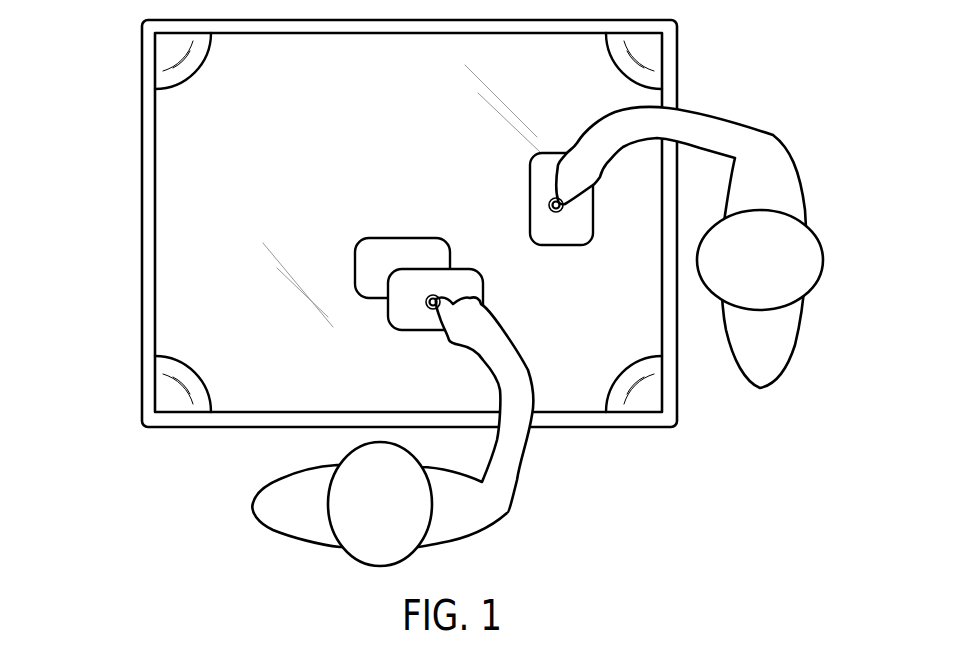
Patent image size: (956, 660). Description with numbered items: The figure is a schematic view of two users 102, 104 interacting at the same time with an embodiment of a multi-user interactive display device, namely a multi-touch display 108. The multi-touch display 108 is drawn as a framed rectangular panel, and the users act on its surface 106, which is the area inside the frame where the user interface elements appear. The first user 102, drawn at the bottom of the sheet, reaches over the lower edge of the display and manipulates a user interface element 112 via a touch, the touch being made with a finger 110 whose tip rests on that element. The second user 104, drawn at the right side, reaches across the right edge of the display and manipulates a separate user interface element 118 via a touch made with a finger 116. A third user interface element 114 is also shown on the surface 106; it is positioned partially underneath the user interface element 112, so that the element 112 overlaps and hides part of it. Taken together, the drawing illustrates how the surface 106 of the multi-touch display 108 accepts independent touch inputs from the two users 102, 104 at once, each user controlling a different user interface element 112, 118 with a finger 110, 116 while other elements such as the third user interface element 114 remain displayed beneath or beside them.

The user 102 is at (523, 463).
The user 104 is at (738, 123).
The surface 106 is at (155, 247).
The multi-touch display 108 is at (142, 163).
The finger 110 is at (440, 321).
The user interface element 112 is at (403, 331).
The third user interface element 114 is at (372, 238).
The finger 116 is at (568, 203).
The user interface element 118 is at (572, 245).